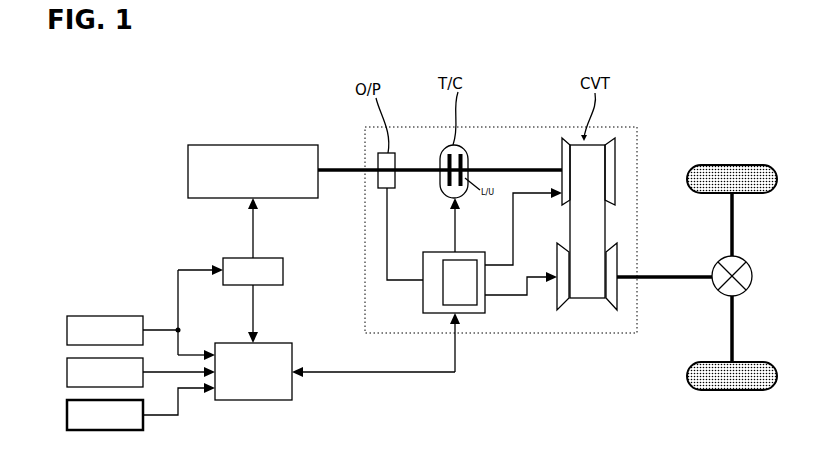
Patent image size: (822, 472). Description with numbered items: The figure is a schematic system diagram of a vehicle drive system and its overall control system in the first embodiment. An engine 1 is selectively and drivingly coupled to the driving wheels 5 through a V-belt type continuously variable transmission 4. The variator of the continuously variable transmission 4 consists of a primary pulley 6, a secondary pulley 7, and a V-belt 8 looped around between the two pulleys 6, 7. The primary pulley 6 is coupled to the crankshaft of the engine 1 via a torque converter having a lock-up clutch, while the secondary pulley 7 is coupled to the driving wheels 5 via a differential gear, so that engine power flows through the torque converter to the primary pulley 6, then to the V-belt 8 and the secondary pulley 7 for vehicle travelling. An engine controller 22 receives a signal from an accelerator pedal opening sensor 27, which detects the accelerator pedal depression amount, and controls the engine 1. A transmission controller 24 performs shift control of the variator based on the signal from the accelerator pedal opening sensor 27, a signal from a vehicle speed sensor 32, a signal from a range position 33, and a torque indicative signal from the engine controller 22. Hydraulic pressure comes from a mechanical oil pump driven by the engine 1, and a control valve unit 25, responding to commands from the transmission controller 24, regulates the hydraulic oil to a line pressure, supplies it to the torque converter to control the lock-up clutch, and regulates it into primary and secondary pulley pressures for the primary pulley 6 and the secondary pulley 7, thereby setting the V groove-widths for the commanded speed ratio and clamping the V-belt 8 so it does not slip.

The engine 1 is at (226, 145).
The continuously variable transmission 4 is at (517, 127).
The driving wheels 5 is at (720, 165).
The primary pulley 6 is at (617, 153).
The secondary pulley 7 is at (617, 290).
The V-belt 8 is at (598, 220).
The engine controller 22 is at (237, 258).
The transmission controller 24 is at (278, 400).
The control valve unit 25 is at (470, 313).
The accelerator pedal opening sensor 27 is at (66, 327).
The vehicle speed sensor 32 is at (66, 369).
The range position 33 is at (66, 412).